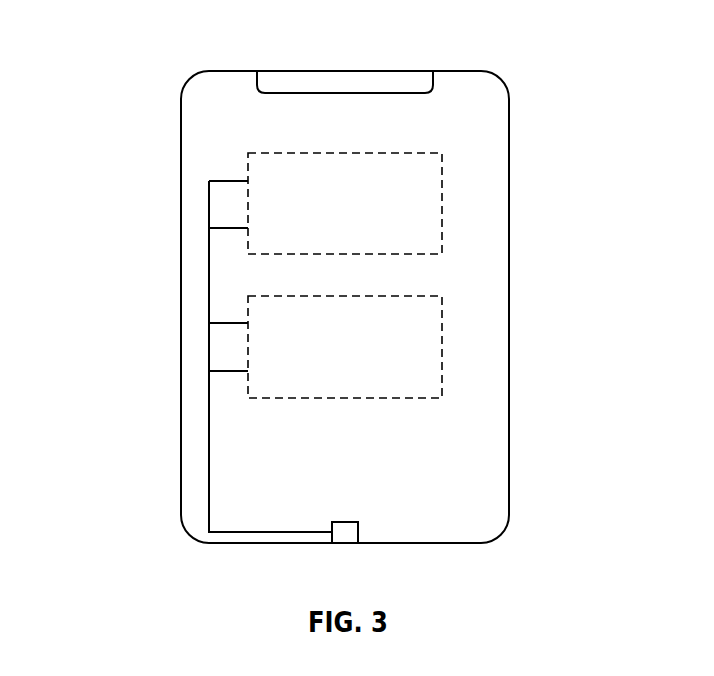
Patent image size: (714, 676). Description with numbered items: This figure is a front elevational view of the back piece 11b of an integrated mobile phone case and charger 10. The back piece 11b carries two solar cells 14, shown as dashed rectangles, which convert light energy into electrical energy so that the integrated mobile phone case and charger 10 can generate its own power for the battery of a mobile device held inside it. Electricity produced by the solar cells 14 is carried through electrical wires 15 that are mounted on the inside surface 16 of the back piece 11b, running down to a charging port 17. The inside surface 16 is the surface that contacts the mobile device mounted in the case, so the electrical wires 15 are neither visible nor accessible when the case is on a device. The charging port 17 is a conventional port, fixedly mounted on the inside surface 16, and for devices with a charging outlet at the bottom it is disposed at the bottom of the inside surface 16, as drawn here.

The integrated mobile phone case and charger 10 is at (145, 38).
The back piece 11b is at (502, 495).
The solar cells 14 is at (420, 200).
The electrical wires 15 is at (209, 291).
The inside surface 16 is at (503, 109).
The charging port 17 is at (358, 536).